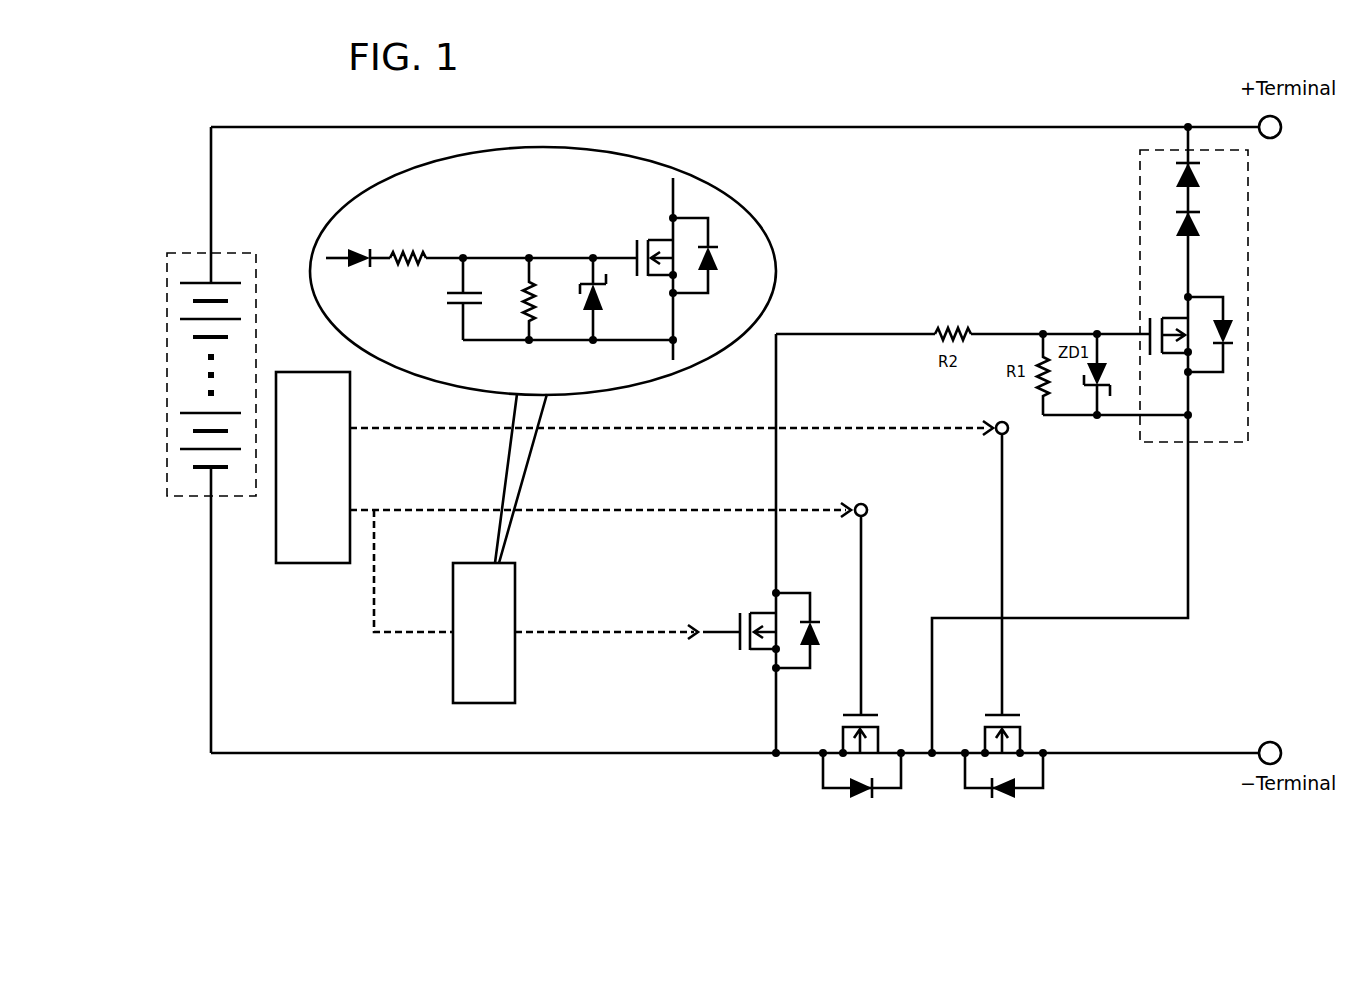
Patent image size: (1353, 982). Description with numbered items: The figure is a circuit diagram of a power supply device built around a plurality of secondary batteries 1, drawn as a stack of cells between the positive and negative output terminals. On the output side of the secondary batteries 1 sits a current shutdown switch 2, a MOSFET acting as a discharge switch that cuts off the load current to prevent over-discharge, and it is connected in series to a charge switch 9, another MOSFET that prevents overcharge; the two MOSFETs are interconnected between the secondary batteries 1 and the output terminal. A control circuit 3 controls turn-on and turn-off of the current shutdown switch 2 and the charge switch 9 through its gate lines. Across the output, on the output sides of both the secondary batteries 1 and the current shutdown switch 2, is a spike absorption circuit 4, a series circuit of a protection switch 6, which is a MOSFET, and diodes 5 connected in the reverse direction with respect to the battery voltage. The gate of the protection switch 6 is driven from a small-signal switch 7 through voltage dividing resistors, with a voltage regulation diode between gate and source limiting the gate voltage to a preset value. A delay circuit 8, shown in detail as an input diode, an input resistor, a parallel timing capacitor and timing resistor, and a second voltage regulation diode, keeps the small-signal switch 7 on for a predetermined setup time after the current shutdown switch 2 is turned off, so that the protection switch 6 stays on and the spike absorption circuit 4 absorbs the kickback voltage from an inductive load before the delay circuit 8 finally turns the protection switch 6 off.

The secondary batteries 1 is at (186, 266).
The current shutdown switch 2 is at (863, 815).
The control circuit 3 is at (318, 565).
The spike absorption circuit 4 is at (1250, 293).
The diodes 5 is at (1164, 177).
The protection switch 6 is at (1234, 364).
The small-signal switch 7 is at (733, 666).
The delay circuit 8 is at (430, 196).
The charge switch 9 is at (1013, 815).